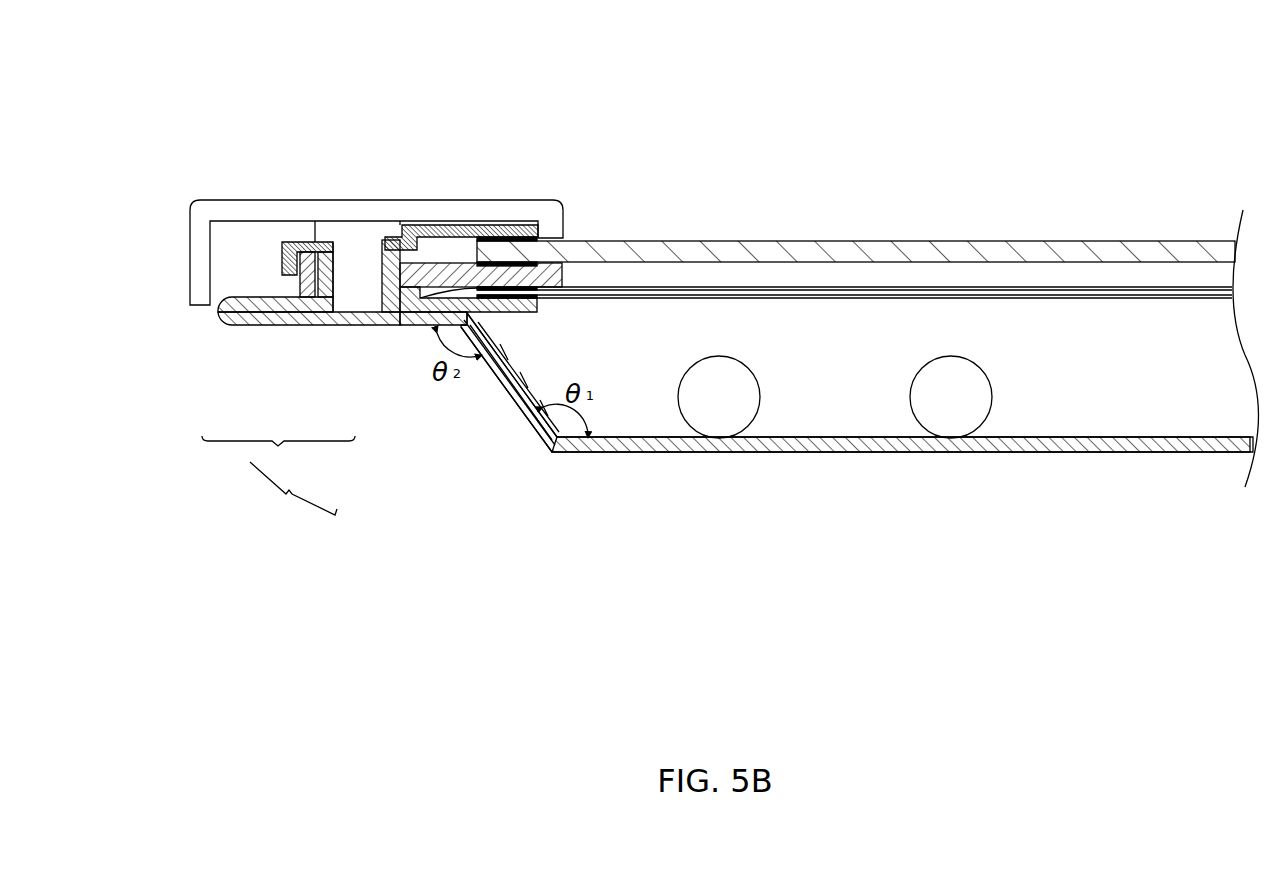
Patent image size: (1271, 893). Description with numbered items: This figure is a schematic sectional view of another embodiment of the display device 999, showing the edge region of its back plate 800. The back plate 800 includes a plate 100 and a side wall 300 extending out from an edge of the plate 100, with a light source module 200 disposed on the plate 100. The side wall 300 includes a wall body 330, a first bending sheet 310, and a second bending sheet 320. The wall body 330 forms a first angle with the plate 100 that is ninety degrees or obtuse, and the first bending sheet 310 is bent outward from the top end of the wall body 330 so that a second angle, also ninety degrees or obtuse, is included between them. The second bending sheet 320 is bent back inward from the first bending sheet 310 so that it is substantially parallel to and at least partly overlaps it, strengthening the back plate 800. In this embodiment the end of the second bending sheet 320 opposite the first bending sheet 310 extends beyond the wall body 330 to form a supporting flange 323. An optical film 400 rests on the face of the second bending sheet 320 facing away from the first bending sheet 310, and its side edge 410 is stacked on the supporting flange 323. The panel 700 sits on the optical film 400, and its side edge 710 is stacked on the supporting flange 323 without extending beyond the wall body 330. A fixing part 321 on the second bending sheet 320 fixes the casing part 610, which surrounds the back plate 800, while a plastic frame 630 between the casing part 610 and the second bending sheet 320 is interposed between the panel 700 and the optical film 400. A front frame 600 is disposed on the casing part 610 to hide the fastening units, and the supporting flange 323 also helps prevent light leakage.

The plate 100 is at (597, 452).
The light source module 200 is at (720, 425).
The side wall 300 is at (278, 456).
The first bending sheet 310 is at (308, 318).
The second bending sheet 320 is at (265, 303).
The fixing part 321 is at (322, 290).
The supporting flange 323 is at (512, 305).
The wall body 330 is at (507, 385).
The optical film 400 is at (673, 292).
The side edge of the optical film 410 is at (418, 306).
The front frame 600 is at (342, 210).
The casing part 610 is at (430, 232).
The plastic frame 630 is at (450, 275).
The panel 700 is at (900, 241).
The side edge of the panel 710 is at (518, 253).
The back plate 800 is at (293, 496).
The display device 999 is at (172, 62).